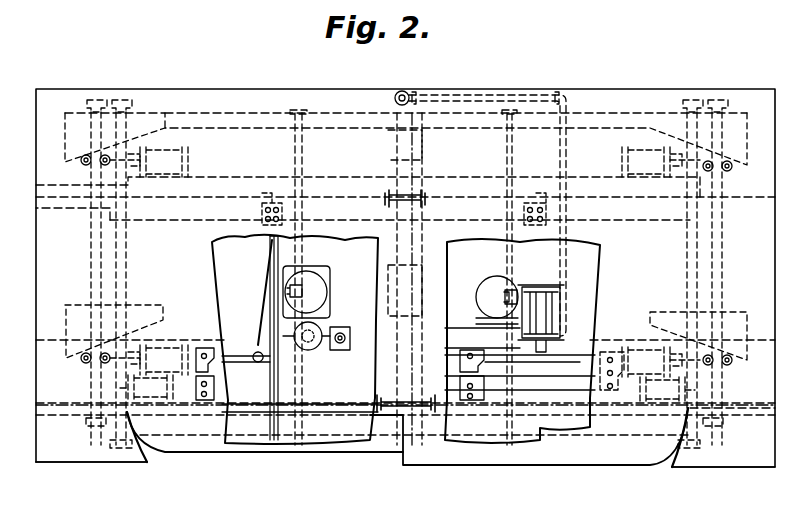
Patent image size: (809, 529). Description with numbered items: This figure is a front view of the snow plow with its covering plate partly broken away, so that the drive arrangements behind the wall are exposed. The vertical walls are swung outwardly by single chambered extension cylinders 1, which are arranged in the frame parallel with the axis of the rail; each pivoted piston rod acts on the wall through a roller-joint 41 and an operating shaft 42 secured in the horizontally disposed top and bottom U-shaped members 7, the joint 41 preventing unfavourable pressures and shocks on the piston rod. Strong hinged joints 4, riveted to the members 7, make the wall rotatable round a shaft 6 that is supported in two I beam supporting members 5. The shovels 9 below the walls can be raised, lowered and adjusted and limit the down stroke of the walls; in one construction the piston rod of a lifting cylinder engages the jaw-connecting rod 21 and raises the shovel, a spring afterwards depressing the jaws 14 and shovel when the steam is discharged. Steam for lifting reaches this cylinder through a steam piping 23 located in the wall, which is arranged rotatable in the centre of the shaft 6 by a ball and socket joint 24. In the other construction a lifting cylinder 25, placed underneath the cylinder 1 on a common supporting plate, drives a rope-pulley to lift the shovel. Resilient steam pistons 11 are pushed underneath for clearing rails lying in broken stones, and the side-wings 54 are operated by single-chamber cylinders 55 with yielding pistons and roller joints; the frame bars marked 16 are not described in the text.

The single chambered cylinder 1 is at (327, 296).
The hinged joint 4 is at (418, 294).
The I beam supporting member 5 is at (425, 203).
The shaft 6 is at (421, 296).
The U-shaped member 7 is at (208, 112).
The shovel 9 is at (348, 452).
The piston 11 is at (120, 393).
The jaw 14 is at (210, 352).
The frame bar 16 is at (176, 222).
The jaw-connecting rod 21 is at (232, 356).
The steam piping 23 is at (470, 95).
The ball and socket joint 24 is at (401, 91).
The lifting cylinder 25 is at (314, 343).
The roller-joint 41 is at (304, 290).
The operating shaft 42 is at (305, 175).
The side-wing 54 is at (103, 462).
The single-chamber cylinder 55 is at (188, 160).